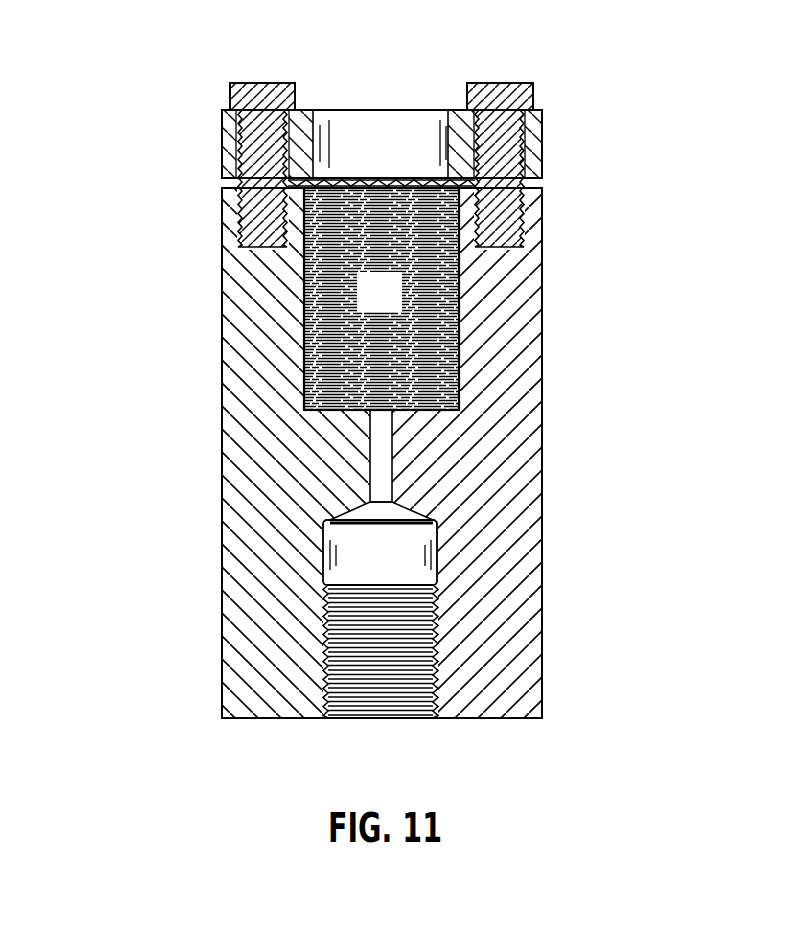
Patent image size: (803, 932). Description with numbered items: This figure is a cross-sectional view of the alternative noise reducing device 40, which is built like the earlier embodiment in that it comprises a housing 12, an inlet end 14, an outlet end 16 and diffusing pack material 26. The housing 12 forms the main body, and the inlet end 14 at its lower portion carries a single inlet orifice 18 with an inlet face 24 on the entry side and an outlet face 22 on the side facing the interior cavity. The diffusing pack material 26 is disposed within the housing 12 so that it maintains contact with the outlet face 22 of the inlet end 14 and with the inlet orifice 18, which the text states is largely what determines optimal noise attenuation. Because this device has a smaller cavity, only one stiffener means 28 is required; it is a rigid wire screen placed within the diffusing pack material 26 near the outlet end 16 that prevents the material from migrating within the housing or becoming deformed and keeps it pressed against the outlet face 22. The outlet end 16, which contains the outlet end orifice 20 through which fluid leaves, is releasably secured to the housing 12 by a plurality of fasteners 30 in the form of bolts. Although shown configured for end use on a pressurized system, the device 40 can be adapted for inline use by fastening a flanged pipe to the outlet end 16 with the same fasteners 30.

The noise reducing device 40 is at (138, 81).
The housing 12 is at (588, 501).
The inlet end 14 is at (279, 742).
The outlet end 16 is at (589, 90).
The inlet end orifice 18 is at (396, 463).
The outlet end orifice 20 is at (346, 86).
The outlet face 22 is at (431, 407).
The inlet face 24 is at (422, 719).
The diffusing pack material 26 is at (397, 308).
The stiffener means 28 is at (563, 184).
The fasteners 30 is at (241, 62).